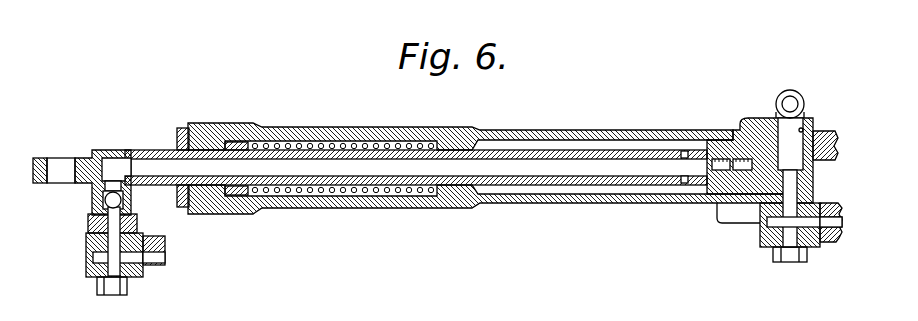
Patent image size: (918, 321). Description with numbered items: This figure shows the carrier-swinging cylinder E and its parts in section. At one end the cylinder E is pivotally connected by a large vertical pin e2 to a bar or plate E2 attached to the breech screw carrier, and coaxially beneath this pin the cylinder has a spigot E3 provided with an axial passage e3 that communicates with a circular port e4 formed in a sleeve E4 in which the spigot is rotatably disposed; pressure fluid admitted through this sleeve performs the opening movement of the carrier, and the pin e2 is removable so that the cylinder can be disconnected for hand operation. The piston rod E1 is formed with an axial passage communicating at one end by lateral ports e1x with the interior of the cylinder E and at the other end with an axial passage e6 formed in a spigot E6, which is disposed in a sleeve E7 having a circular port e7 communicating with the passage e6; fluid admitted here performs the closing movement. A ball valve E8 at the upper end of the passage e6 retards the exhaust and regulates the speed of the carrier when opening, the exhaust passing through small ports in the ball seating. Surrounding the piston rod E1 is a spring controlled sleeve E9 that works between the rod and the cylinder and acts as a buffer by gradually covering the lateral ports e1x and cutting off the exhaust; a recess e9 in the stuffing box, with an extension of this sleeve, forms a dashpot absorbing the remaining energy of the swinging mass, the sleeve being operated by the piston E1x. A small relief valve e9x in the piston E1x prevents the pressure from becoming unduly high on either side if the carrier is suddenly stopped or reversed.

The carrier-swinging cylinder E is at (507, 130).
The piston rod E1 is at (544, 186).
The piston E1x is at (118, 149).
The bar or plate E2 is at (822, 132).
The spigot E3 is at (815, 201).
The sleeve E4 is at (815, 243).
The spigot E6 is at (87, 243).
The sleeve E7 is at (136, 277).
The ball valve E8 is at (131, 214).
The spring controlled sleeve E9 is at (380, 208).
The lateral ports e1x is at (684, 150).
The vertical pin e2 is at (791, 121).
The axial passage e3 is at (774, 227).
The circular port e4 is at (771, 246).
The axial passage e6 is at (97, 218).
The circular port e7 is at (90, 267).
The recess e9 is at (238, 134).
The relief valve e9x is at (706, 195).